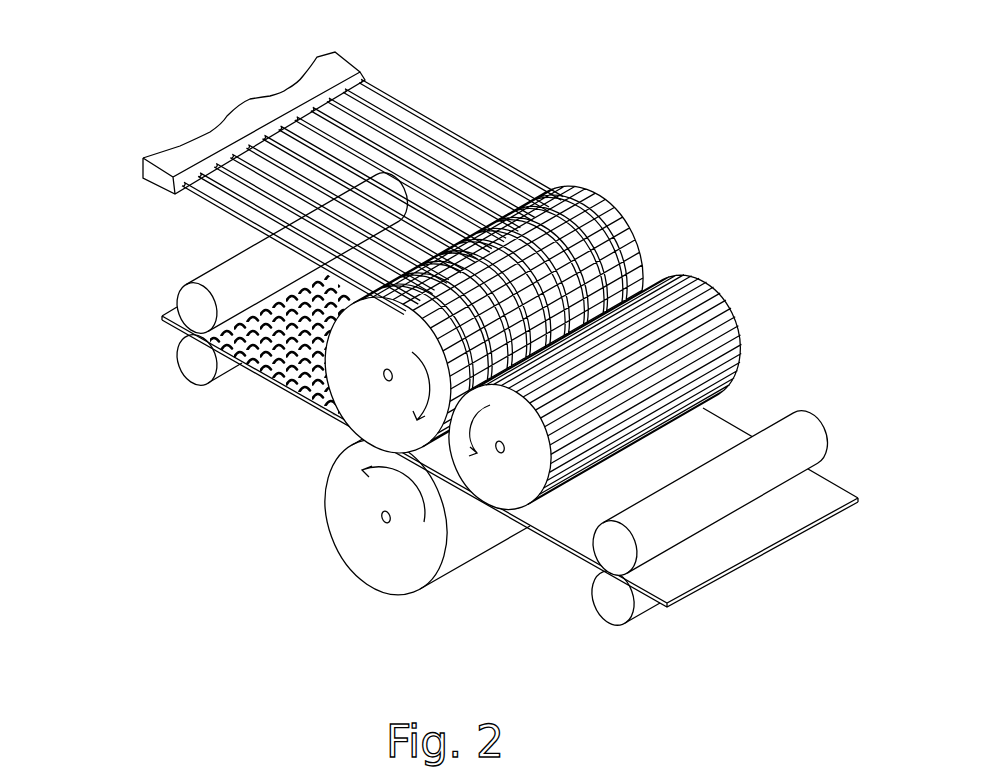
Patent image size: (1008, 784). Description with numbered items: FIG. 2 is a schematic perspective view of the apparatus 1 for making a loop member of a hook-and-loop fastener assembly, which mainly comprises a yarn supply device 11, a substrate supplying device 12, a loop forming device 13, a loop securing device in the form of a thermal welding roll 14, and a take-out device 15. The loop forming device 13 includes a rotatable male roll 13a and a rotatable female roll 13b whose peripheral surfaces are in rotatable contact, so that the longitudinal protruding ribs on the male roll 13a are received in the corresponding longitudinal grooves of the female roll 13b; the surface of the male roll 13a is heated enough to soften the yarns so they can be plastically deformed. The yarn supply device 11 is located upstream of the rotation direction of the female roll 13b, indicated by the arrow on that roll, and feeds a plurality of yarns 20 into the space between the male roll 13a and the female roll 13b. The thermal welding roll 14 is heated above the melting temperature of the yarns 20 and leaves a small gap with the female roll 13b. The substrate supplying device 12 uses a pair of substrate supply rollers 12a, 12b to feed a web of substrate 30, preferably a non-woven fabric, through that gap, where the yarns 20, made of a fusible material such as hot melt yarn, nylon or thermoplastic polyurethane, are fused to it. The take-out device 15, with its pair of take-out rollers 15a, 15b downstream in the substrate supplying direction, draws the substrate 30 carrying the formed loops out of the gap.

The apparatus 1 is at (150, 576).
The yarn supply device 11 is at (343, 65).
The yarns 20 is at (403, 100).
The substrate supplying device 12 is at (710, 546).
The substrate supply roller 12a is at (627, 610).
The substrate supply roller 12b is at (673, 525).
The loop forming device 13 is at (507, 390).
The male roll 13a is at (530, 497).
The female roll 13b is at (370, 405).
The thermal welding roll 14 is at (342, 527).
The take-out device 15 is at (229, 282).
The take-out roller 15a is at (178, 367).
The take-out roller 15b is at (259, 253).
The substrate 30 is at (730, 430).